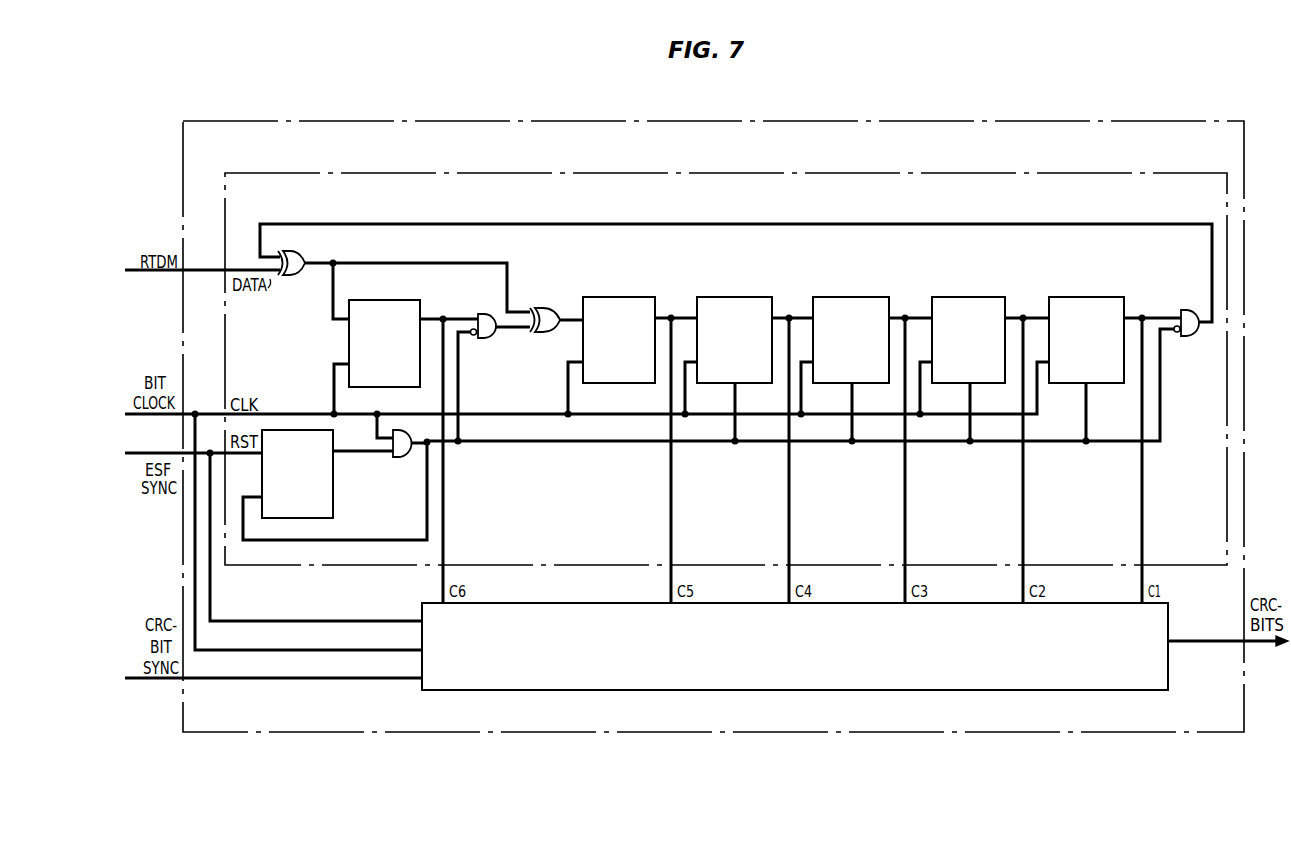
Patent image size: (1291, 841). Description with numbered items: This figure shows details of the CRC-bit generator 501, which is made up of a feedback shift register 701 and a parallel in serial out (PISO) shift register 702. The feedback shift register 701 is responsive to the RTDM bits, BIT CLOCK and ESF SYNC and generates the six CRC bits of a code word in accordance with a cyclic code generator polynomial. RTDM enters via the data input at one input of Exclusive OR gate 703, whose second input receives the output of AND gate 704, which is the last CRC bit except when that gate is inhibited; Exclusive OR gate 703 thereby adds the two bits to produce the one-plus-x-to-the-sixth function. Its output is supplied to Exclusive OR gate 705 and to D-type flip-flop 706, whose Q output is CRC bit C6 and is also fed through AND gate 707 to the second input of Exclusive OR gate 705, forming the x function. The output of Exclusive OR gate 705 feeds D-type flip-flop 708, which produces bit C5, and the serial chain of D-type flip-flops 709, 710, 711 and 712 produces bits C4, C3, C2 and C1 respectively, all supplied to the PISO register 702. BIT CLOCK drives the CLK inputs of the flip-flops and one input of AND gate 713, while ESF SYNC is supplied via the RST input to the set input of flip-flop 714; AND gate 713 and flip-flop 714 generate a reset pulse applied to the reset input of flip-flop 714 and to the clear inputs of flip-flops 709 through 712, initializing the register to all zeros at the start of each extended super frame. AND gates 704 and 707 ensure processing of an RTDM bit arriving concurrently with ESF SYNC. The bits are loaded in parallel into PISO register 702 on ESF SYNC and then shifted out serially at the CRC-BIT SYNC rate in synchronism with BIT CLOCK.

The CRC-bit generator 501 is at (831, 110).
The feedback shift register 701 is at (345, 162).
The parallel in serial out (PISO) shift register 702 is at (893, 690).
The Exclusive OR gate 703 is at (299, 240).
The AND gate 704 is at (1187, 310).
The Exclusive OR gate 705 is at (540, 308).
The D-type flip-flop 706 is at (390, 300).
The AND gate 707 is at (488, 339).
The D-type flip-flop 708 is at (622, 297).
The D-type flip-flop 709 is at (735, 297).
The D-type flip-flop 710 is at (848, 297).
The D-type flip-flop 711 is at (967, 297).
The D-type flip-flop 712 is at (1086, 297).
The AND gate 713 is at (402, 457).
The flip-flop 714 is at (335, 494).